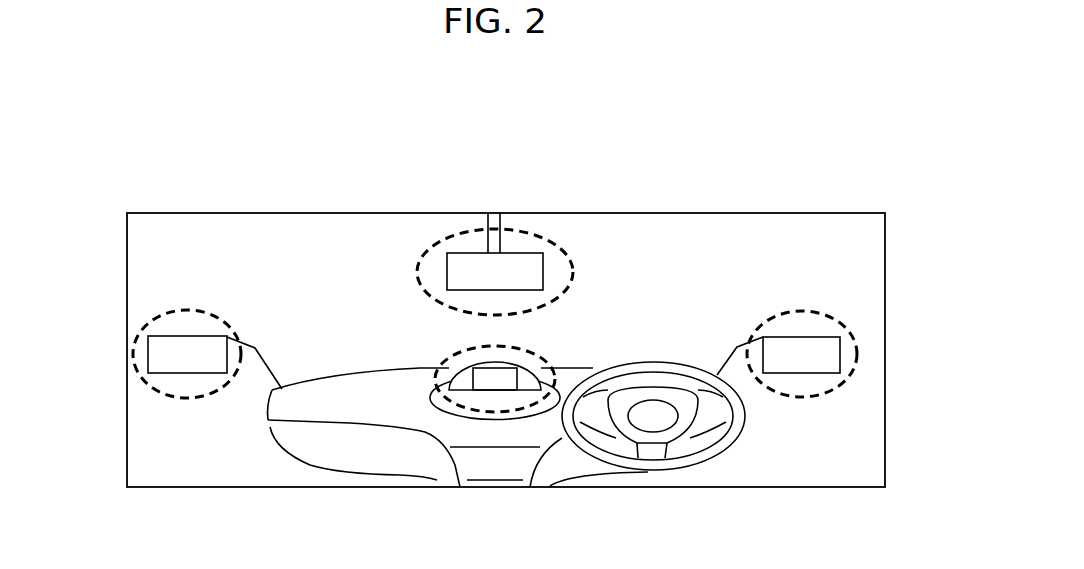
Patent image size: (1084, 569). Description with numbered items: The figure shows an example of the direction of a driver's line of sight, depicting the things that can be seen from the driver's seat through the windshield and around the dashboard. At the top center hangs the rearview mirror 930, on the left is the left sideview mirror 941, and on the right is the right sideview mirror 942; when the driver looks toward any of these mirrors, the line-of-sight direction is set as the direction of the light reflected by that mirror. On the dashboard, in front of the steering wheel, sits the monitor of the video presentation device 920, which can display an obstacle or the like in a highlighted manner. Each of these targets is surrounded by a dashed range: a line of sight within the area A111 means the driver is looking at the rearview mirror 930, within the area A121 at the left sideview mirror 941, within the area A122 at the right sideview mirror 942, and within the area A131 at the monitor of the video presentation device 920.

The video presentation device 920 is at (470, 364).
The rearview mirror 930 is at (463, 252).
The left sideview mirror 941 is at (177, 373).
The right sideview mirror 942 is at (812, 373).
The area A111 is at (547, 237).
The area A121 is at (157, 312).
The area A122 is at (842, 316).
The area A131 is at (545, 355).